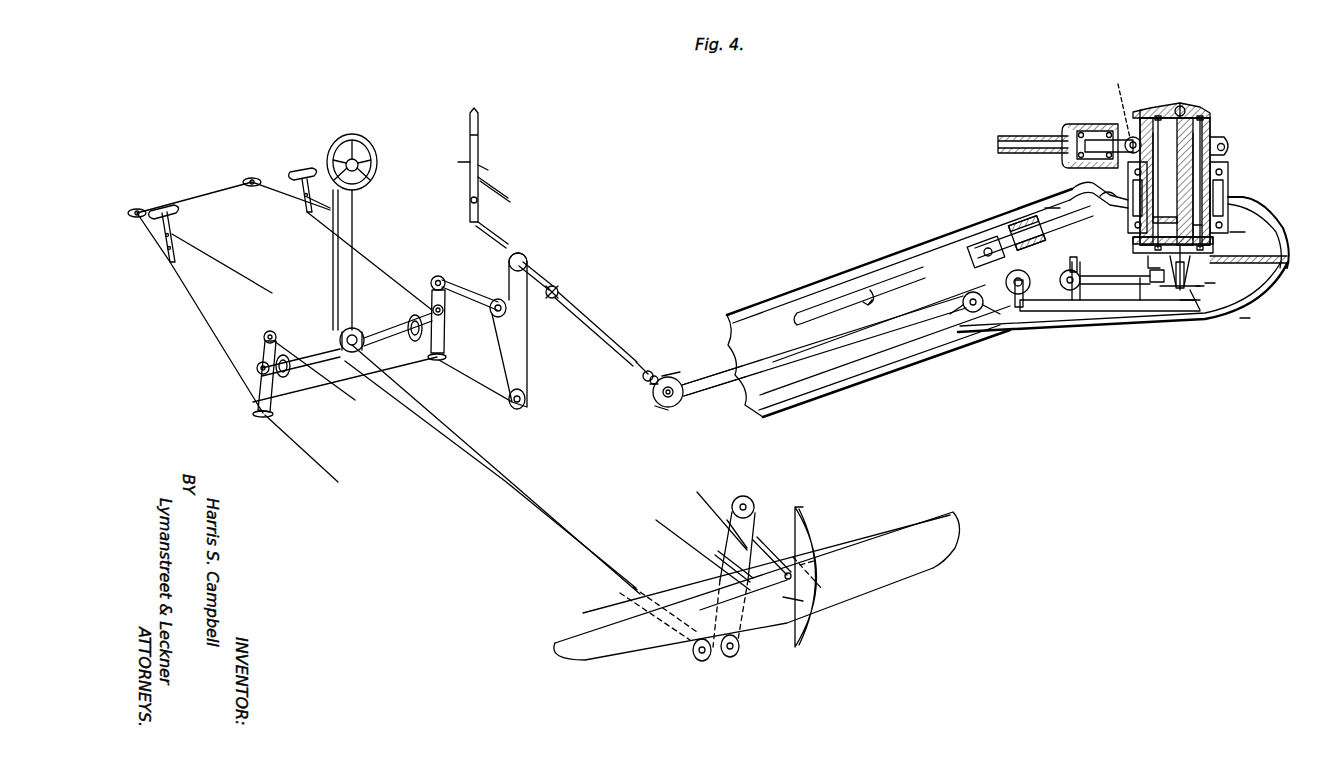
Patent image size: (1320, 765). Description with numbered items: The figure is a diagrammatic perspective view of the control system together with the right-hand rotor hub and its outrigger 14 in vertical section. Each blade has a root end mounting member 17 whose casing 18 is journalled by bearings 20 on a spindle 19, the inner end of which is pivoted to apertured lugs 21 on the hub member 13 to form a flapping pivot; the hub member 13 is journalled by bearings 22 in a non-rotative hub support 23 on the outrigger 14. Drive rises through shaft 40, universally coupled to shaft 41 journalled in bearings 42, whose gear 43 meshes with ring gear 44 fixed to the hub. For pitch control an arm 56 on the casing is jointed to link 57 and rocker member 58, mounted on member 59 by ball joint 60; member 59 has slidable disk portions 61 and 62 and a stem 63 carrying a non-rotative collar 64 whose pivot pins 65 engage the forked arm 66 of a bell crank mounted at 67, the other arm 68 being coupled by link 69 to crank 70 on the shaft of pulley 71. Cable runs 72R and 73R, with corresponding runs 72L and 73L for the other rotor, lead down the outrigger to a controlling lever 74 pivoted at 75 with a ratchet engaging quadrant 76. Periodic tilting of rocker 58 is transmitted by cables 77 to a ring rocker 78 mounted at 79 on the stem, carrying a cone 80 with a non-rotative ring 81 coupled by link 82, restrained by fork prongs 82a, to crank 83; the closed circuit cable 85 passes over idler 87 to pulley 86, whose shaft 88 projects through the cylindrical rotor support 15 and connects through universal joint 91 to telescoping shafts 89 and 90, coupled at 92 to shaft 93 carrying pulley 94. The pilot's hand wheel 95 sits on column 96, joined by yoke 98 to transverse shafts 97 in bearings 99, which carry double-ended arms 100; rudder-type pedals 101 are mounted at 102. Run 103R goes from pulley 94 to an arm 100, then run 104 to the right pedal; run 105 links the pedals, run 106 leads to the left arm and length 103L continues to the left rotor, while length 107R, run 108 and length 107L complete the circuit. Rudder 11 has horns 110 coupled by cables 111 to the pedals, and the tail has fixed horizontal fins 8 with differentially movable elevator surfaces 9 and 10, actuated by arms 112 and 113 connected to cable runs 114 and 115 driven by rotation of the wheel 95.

The fixed horizontal fin 8 is at (598, 600).
The differentially movable horizontal surface 9 is at (648, 650).
The differentially movable horizontal surface 10 is at (916, 569).
The rudder 11 is at (812, 625).
The hub member 13 is at (1232, 157).
The outrigger 14 is at (875, 377).
The cylindrical rotor hub support 15 is at (663, 417).
The root end mounting member 17 is at (1006, 134).
The casing 18 is at (1108, 128).
The spindle 19 is at (1096, 152).
The bearings 20 is at (1086, 124).
The apertured lugs 21 is at (1133, 136).
The bearings 22 is at (1228, 175).
The non-rotative hub support 23 is at (1104, 198).
The shaft 40 is at (856, 288).
The shaft 41 is at (1030, 216).
The bearings 42 is at (1012, 232).
The gear 43 is at (1076, 196).
The ring gear 44 is at (1285, 244).
The inwardly extending arm 56 is at (1116, 102).
The link 57 is at (1143, 108).
The rocker member 58 is at (1196, 104).
The member 59 is at (1232, 183).
The universal or ball and socket joint 60 is at (1180, 106).
The disk-like portion 61 is at (1210, 140).
The disk-like portion 62 is at (1226, 202).
The stem 63 is at (1147, 263).
The non-rotative collar 64 is at (1242, 320).
The pivot pins 65 is at (1186, 314).
The forked arm 66 is at (1194, 290).
The bell crank mounting 67 is at (1206, 284).
The bell crank arm 68 is at (1198, 288).
The link 69 is at (1116, 312).
The crank 70 is at (1022, 305).
The pulley 71 is at (1046, 312).
The left cable 72L is at (505, 240).
The cable run 72R is at (486, 222).
The left cable 73L is at (503, 198).
The cable run 73R is at (508, 194).
The controlling lever 74 is at (478, 134).
The pivot 75 is at (466, 200).
The quadrant 76 is at (485, 168).
The links or cables 77 is at (1208, 153).
The rocker member 78 is at (1188, 270).
The universal mounting 79 is at (1220, 234).
The cone 80 is at (1178, 284).
The non-rotative ring 81 is at (1156, 282).
The link 82 is at (1100, 276).
The fork prongs 82a is at (1142, 300).
The crank 83 is at (1068, 262).
The closed circuit cable system 85 is at (732, 370).
The pulley 86 is at (688, 402).
The idler 87 is at (968, 310).
The mounting shaft 88 is at (646, 388).
The shaft 89 is at (642, 370).
The shaft 90 is at (592, 322).
The universal connection 91 is at (652, 370).
The universal coupling 92 is at (554, 289).
The shaft 93 is at (534, 279).
The pulley 94 is at (520, 256).
The hand wheel 95 is at (355, 140).
The column 96 is at (343, 215).
The transverse shafts 97 is at (316, 352).
The yoke 98 is at (356, 328).
The supporting bearings 99 is at (295, 383).
The double-ended arms 100 is at (266, 393).
The pedals 101 is at (175, 213).
The pedal mounting 102 is at (166, 250).
The cable length 103L is at (345, 395).
The cable run 103R is at (469, 291).
The cable run 104 is at (385, 274).
The cable run 105 is at (193, 194).
The cable run 106 is at (215, 318).
The cable length 107L is at (310, 461).
The cable length 107R is at (528, 348).
The cable run 108 is at (403, 364).
The horns 110 is at (820, 600).
The cables 111 is at (228, 250).
The arm 112 is at (732, 552).
The arm 113 is at (772, 540).
The cable run 114 is at (732, 525).
The cable run 115 is at (758, 518).